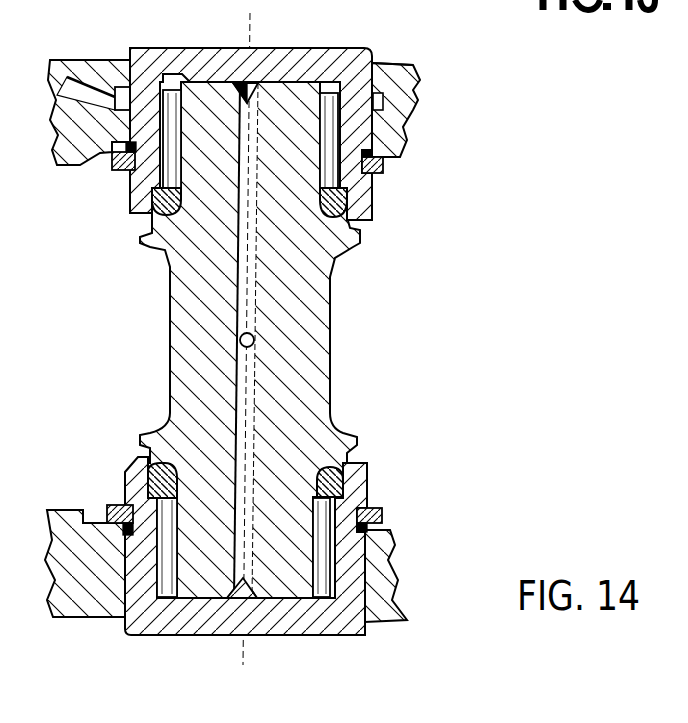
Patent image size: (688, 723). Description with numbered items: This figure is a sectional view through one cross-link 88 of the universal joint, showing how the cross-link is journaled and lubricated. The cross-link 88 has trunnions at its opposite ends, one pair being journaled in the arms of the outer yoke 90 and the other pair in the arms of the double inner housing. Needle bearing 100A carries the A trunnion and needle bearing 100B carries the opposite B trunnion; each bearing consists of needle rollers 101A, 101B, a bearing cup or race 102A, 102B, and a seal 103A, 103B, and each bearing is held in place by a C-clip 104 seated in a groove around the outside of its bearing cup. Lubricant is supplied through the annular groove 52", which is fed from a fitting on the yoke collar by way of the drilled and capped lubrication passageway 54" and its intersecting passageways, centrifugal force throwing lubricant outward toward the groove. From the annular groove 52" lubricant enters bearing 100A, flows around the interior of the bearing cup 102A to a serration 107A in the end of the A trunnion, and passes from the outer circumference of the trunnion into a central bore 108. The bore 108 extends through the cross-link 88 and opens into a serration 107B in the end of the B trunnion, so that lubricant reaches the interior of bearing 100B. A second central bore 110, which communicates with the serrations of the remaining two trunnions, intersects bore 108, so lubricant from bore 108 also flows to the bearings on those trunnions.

The cross-link 88 is at (332, 277).
The outer yoke 90 is at (403, 108).
The annular groove 52 is at (382, 63).
The lubrication passageway 54 is at (72, 80).
The needle bearing 100A is at (221, 116).
The needle bearing 100B is at (254, 560).
The needle rollers 101A is at (173, 90).
The needle rollers 101B is at (327, 562).
The bearing cup 102A is at (222, 50).
The bearing cup 102B is at (162, 635).
The seal 103A is at (153, 200).
The seal 103B is at (147, 483).
The C-clip 104 is at (113, 173).
The serration 107A is at (258, 83).
The serration 107B is at (250, 595).
The central bore 108 is at (254, 388).
The central bore 110 is at (254, 343).